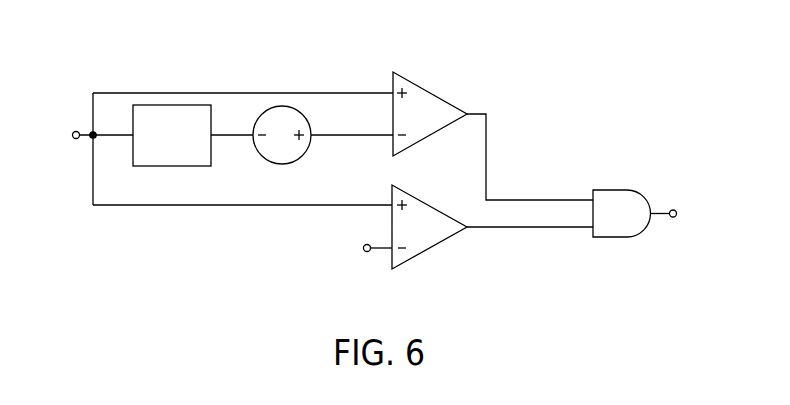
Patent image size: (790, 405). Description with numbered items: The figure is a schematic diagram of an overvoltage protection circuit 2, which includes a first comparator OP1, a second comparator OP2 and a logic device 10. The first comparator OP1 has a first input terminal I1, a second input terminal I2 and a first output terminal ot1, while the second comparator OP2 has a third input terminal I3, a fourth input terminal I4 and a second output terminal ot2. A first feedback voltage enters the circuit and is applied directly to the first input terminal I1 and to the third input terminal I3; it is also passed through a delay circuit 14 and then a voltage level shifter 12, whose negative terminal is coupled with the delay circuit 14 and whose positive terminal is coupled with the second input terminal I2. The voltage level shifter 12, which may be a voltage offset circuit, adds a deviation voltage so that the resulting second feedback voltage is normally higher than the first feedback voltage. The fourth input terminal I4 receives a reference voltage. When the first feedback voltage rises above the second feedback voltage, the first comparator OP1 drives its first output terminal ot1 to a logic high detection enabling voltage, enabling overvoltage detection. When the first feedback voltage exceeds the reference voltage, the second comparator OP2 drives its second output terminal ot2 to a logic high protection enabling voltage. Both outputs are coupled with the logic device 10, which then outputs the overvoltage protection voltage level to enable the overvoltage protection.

The overvoltage protection circuit 2 is at (648, 25).
The logic device 10 is at (627, 197).
The voltage level shifter 12 is at (259, 160).
The delay circuit 14 is at (172, 166).
The first comparator OP1 is at (432, 92).
The second comparator OP2 is at (431, 252).
The first input terminal I1 is at (393, 92).
The second input terminal I2 is at (388, 136).
The third input terminal I3 is at (392, 204).
The fourth input terminal I4 is at (392, 250).
The first output terminal ot1 is at (477, 112).
The second output terminal ot2 is at (478, 228).